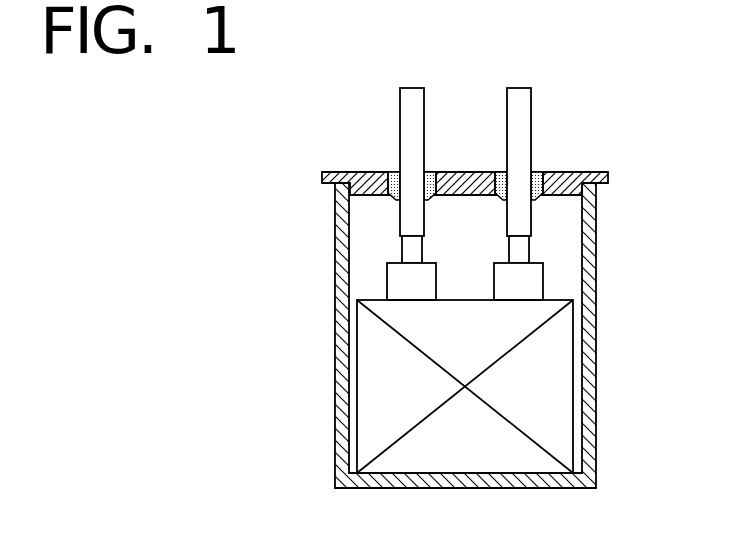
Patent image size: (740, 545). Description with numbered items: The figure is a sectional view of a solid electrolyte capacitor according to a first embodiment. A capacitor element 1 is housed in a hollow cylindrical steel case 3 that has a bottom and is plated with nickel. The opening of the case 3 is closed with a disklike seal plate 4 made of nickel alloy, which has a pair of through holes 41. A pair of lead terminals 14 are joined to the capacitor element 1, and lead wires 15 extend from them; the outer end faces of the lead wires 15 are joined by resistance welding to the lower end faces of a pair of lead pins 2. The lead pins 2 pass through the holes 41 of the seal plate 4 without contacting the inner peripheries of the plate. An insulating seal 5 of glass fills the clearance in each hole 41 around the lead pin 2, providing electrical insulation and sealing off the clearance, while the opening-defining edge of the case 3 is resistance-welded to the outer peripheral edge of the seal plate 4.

The capacitor element 1 is at (562, 430).
The lead pin 2 is at (403, 110).
The case 3 is at (596, 343).
The seal plate 4 is at (600, 172).
The insulating seal 5 is at (433, 171).
The lead terminal 14 is at (390, 289).
The lead wire 15 is at (403, 246).
The through hole 41 is at (391, 172).